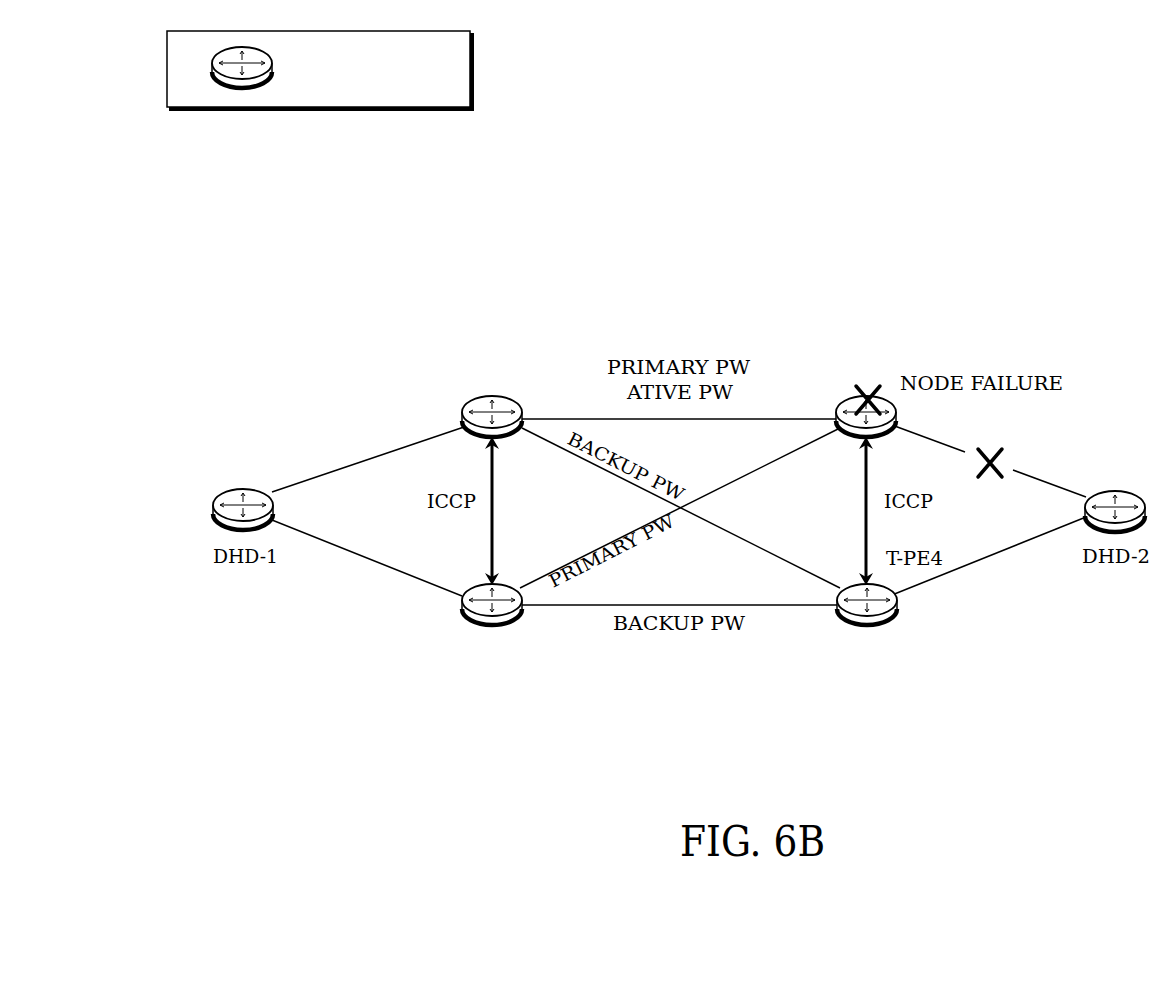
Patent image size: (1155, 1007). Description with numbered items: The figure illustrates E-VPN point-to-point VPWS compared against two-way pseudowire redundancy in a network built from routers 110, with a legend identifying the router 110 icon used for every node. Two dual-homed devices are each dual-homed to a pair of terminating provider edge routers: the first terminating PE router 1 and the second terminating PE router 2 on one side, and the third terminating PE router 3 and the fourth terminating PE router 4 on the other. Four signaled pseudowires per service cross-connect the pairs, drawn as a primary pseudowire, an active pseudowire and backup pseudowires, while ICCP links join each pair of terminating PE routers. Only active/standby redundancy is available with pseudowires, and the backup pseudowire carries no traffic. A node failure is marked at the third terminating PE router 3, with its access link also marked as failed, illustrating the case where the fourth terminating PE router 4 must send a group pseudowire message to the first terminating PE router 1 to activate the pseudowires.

The router 110 is at (319, 70).
The T-PE1 provider edge router 1 is at (492, 399).
The T-PE2 provider edge router 2 is at (469, 586).
The T-PE3 provider edge router (failed node) 3 is at (866, 391).
The T-PE4 provider edge router 4 is at (866, 622).